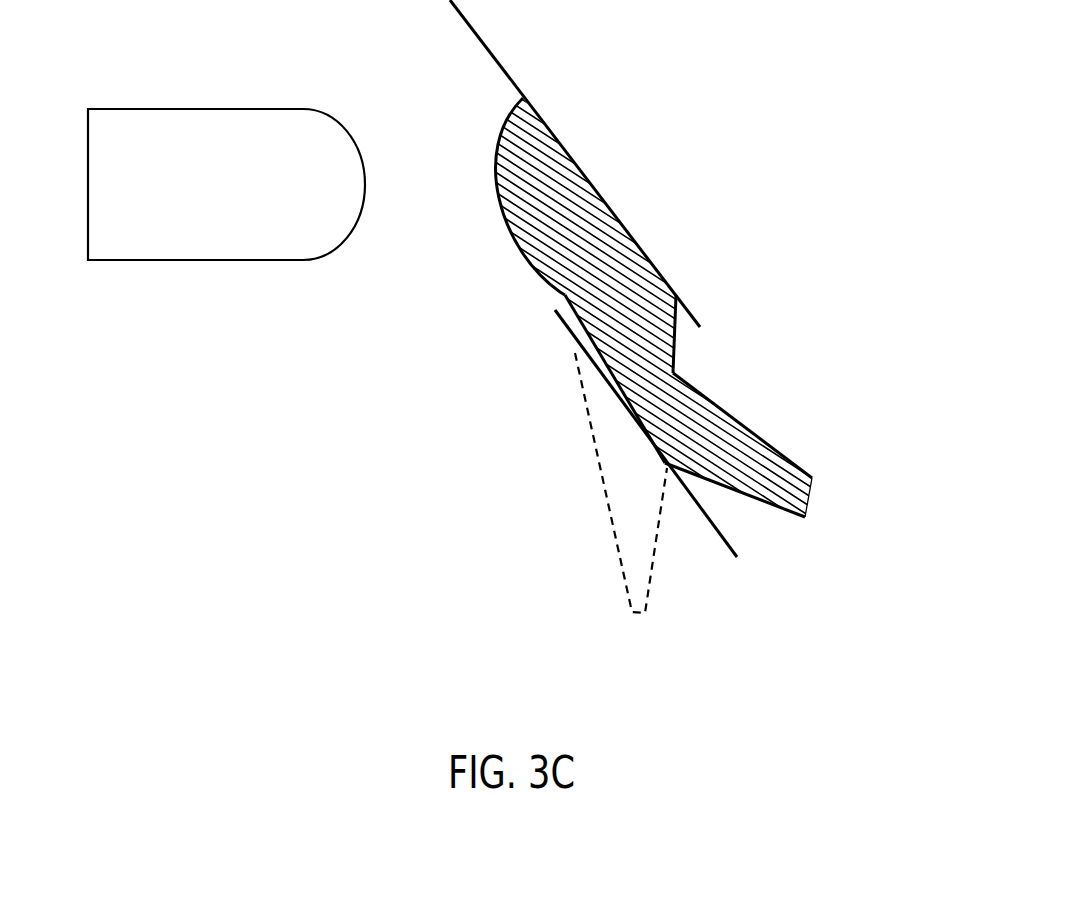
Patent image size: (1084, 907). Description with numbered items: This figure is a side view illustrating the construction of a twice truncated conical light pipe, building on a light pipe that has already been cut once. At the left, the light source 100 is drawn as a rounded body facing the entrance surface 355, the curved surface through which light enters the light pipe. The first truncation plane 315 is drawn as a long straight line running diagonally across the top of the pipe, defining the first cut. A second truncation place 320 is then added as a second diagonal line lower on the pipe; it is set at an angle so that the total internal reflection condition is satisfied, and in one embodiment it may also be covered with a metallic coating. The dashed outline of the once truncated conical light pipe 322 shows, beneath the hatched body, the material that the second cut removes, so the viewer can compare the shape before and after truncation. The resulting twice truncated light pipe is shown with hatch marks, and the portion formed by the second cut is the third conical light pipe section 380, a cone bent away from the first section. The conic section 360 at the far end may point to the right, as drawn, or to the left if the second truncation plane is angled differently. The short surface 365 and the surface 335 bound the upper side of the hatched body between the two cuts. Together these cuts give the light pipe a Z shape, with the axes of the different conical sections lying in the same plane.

The light source 100 is at (198, 108).
The first truncation plane 315 is at (502, 63).
The entrance surface 355 is at (500, 127).
The shoulder surface 365 is at (677, 342).
The upper blade surface 335 is at (753, 428).
The conic section 360 is at (808, 498).
The third conical light pipe section 380 is at (770, 488).
The second truncation plane 320 is at (600, 377).
The outline of the once truncated conical light pipe 322 is at (628, 492).